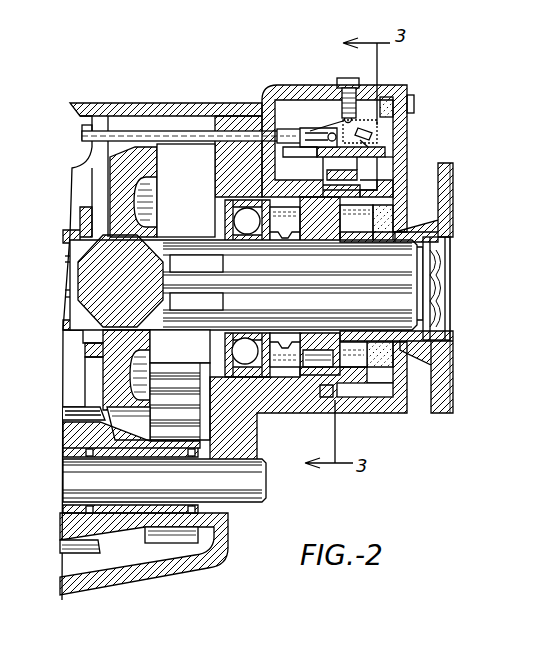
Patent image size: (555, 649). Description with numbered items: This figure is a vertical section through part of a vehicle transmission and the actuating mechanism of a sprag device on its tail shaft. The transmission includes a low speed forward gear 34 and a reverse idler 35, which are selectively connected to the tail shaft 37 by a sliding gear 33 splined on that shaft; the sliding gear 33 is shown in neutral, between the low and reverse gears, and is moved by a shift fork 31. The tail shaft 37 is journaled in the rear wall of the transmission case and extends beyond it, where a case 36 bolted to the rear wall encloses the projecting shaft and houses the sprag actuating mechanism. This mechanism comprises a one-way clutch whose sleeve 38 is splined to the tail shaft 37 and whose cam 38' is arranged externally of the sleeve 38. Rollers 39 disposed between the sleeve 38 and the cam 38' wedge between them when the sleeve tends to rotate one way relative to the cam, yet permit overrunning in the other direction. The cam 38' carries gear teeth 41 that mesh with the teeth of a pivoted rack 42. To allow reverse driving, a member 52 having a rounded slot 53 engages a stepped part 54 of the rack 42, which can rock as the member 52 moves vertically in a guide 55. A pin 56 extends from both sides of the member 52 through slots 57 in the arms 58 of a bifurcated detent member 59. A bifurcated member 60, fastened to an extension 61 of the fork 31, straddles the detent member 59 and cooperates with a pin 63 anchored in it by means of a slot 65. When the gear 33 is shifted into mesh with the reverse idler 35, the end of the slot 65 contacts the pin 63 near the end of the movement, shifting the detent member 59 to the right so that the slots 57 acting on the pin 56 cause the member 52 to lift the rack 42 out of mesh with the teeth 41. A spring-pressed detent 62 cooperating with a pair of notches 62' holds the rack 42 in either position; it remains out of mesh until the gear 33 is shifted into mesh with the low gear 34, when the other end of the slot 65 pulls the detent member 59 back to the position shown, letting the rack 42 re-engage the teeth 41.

The shift fork 31 is at (76, 116).
The extension 61 is at (207, 131).
The bifurcated member 60 is at (292, 137).
The spring-pressed detent 62 is at (331, 93).
The notches 62' is at (307, 124).
The bifurcated detent member 59 is at (356, 116).
The arms 58 is at (376, 123).
The slots 57 is at (385, 150).
The pin 56 is at (385, 165).
The guide 55 is at (385, 180).
The stepped part 54 is at (367, 190).
The slot 53 is at (350, 195).
The slot 65 is at (262, 153).
The pin 63 is at (277, 153).
The rack 42 is at (340, 180).
The member 52 is at (385, 179).
The sliding gear 33 is at (150, 202).
The tail shaft 37 is at (168, 260).
The sleeve 38 is at (277, 324).
The rollers 39 is at (352, 342).
The reverse idler 35 is at (166, 378).
The case 36 is at (278, 405).
The gear teeth 41 is at (322, 398).
The cam 38' is at (183, 451).
The low speed forward gear 34 is at (95, 551).